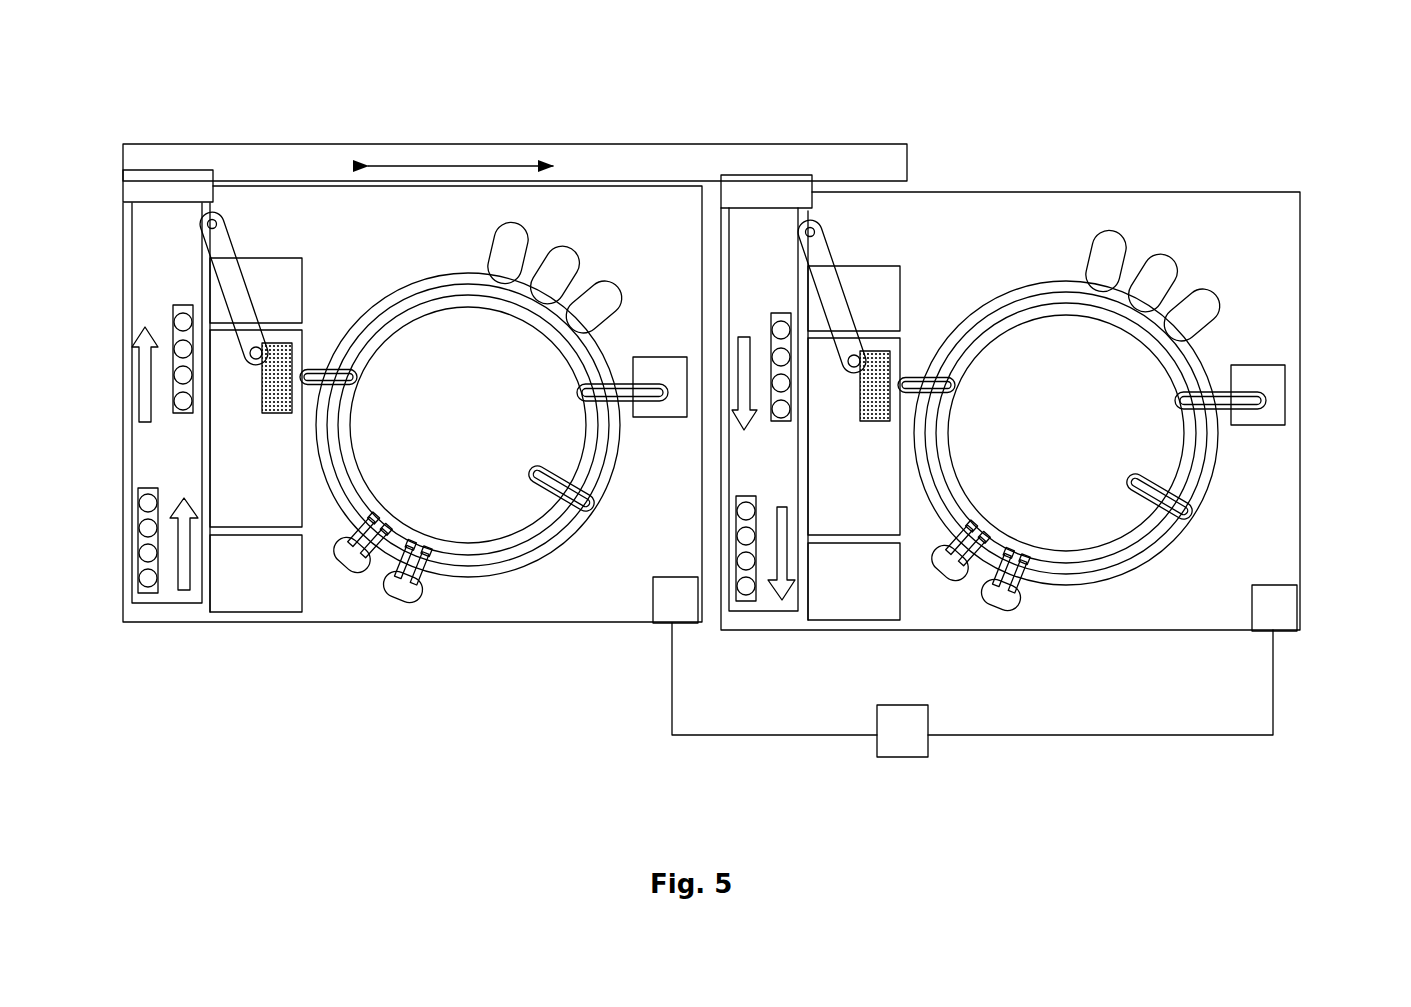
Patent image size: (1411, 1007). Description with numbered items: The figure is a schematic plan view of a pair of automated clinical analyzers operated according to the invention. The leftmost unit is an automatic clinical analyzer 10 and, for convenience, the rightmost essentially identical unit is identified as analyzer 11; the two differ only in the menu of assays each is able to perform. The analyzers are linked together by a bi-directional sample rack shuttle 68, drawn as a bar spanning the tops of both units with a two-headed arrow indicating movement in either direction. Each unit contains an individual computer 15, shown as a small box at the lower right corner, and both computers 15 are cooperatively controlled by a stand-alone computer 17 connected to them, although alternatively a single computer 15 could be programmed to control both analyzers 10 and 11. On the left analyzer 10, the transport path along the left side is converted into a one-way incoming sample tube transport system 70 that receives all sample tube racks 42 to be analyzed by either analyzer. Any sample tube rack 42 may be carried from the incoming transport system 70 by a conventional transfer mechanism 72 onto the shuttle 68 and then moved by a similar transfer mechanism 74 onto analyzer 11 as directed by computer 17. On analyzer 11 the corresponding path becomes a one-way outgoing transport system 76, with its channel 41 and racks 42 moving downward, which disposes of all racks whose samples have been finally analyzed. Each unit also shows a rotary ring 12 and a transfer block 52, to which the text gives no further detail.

The automatic clinical analyzer 10 is at (114, 324).
The analyzer 11 is at (1324, 331).
The rotary ring / turntable 12 is at (401, 281).
The computer 15 is at (975, 604).
The stand-alone computer 17 is at (972, 690).
The conveyor channel 41 is at (771, 616).
The sample tube rack 42 is at (155, 595).
The transfer block 52 is at (264, 422).
The bi-directional sample rack shuttle 68 is at (523, 146).
The one-way incoming sample tube transport system 70 is at (127, 517).
The transfer mechanism 72 is at (136, 185).
The transfer mechanism 74 is at (769, 187).
The one-way outgoing transport system 76 is at (751, 292).